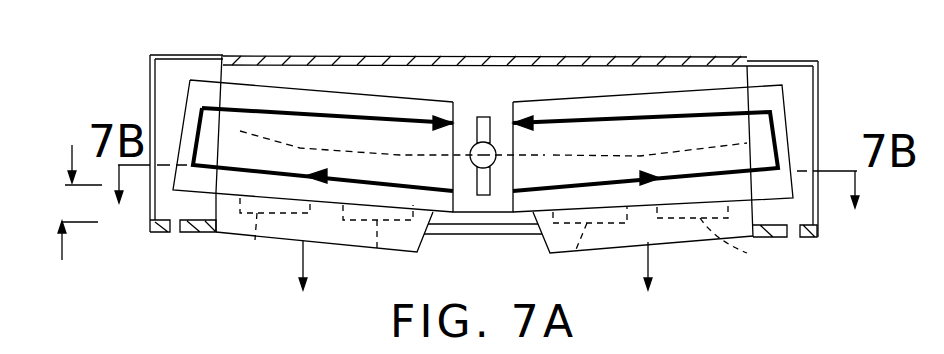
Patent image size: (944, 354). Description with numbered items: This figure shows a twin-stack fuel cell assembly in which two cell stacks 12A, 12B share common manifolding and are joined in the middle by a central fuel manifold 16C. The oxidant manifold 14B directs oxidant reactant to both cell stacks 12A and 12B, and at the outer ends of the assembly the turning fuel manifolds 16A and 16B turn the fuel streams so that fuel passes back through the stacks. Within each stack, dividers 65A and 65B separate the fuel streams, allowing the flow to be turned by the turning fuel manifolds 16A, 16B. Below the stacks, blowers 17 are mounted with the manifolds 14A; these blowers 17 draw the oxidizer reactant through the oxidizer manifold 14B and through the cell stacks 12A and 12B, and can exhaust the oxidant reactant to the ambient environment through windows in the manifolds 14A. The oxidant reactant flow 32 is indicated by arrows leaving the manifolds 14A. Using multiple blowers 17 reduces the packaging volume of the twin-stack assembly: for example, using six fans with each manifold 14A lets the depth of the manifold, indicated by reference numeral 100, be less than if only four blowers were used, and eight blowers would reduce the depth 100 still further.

The depth of the manifold 100 is at (70, 160).
The oxidant input manifold 14A is at (345, 237).
The output manifold 14B is at (822, 123).
The turning fuel manifold 16A is at (205, 95).
The turning fuel manifold 16B is at (777, 100).
The central fuel manifold 16C is at (500, 115).
The cell stack 12A is at (397, 148).
The cell stack 12B is at (727, 142).
The divider 65A is at (223, 138).
The divider 65B is at (545, 152).
The blowers 17 is at (250, 242).
The oxidant reactant flow 32 is at (303, 246).